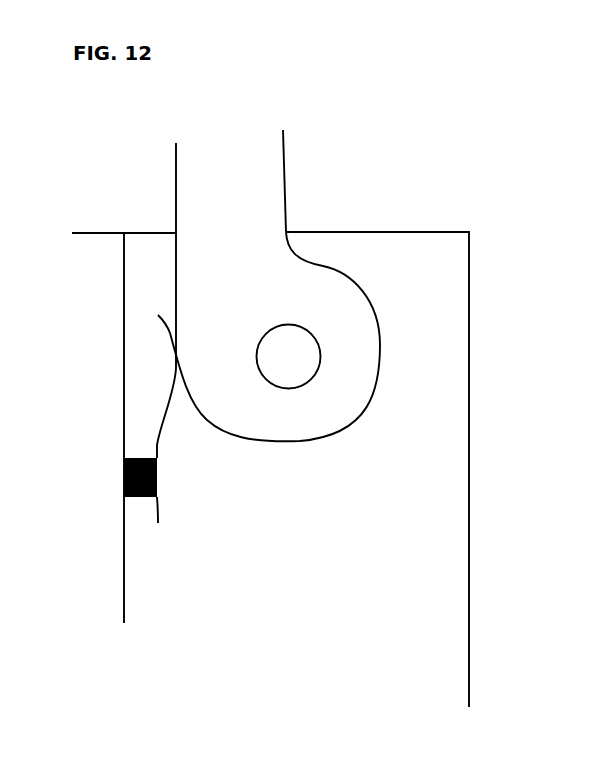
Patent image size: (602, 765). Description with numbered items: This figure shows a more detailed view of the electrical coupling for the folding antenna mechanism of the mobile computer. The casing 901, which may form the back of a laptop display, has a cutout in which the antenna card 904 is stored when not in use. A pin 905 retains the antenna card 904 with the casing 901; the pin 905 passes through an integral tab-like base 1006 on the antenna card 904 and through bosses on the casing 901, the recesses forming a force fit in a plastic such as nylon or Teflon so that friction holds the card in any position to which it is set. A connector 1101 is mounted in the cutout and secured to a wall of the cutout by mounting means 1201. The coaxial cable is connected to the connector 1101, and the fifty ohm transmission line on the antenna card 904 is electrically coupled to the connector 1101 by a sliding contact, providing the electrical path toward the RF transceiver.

The casing 901 is at (124, 233).
The antenna card 904 is at (267, 173).
The pin 905 is at (300, 352).
The base 1006 is at (345, 373).
The connector 1101 is at (152, 412).
The mounting means 1201 is at (120, 495).